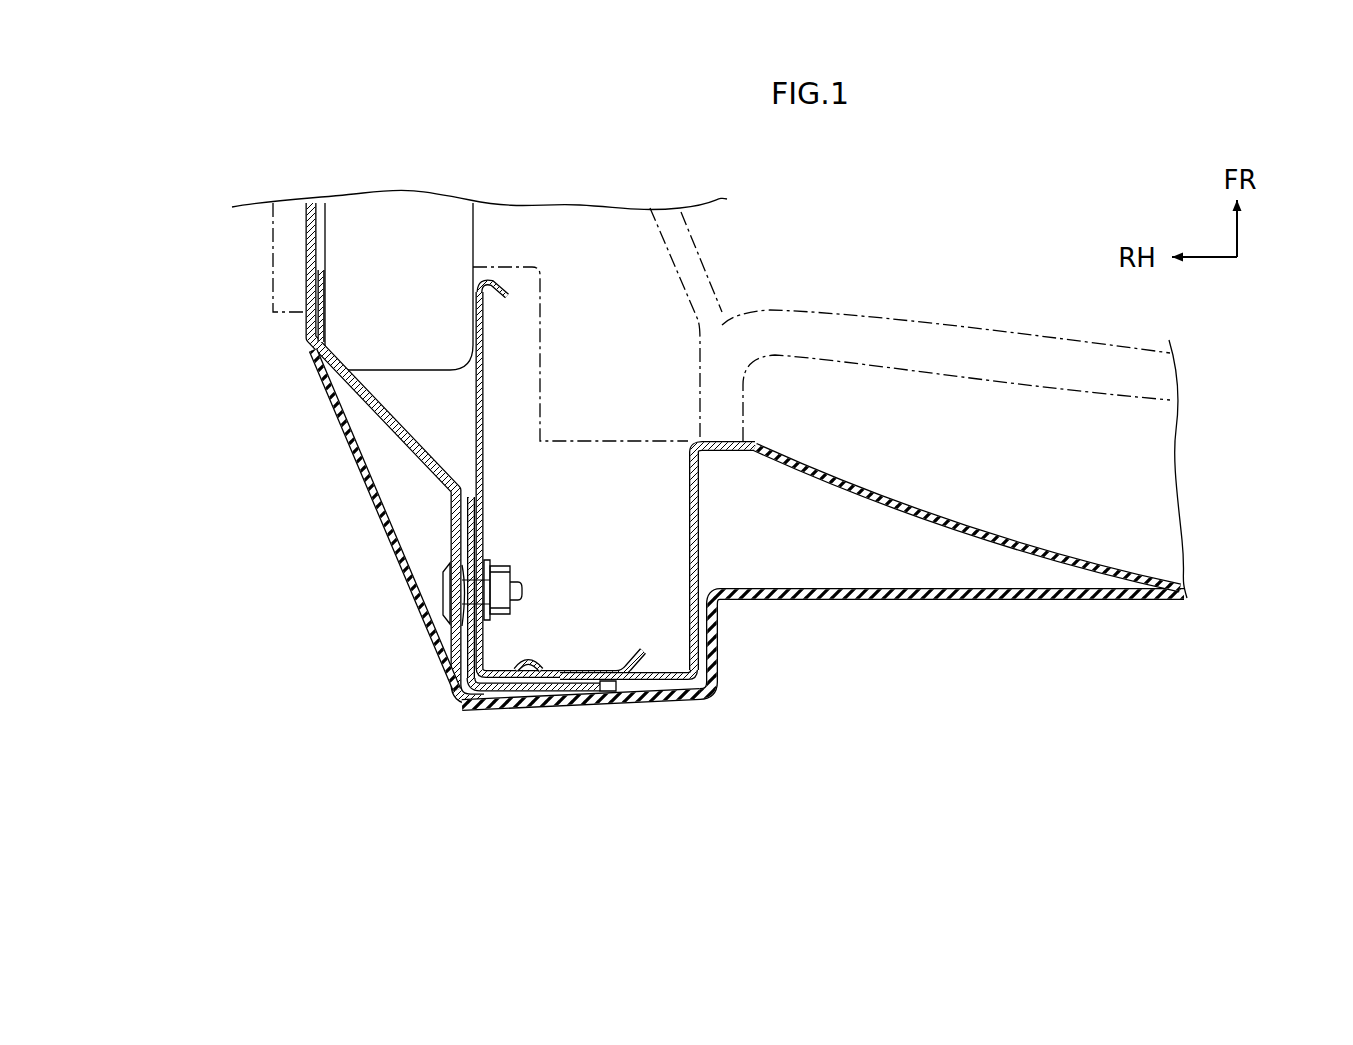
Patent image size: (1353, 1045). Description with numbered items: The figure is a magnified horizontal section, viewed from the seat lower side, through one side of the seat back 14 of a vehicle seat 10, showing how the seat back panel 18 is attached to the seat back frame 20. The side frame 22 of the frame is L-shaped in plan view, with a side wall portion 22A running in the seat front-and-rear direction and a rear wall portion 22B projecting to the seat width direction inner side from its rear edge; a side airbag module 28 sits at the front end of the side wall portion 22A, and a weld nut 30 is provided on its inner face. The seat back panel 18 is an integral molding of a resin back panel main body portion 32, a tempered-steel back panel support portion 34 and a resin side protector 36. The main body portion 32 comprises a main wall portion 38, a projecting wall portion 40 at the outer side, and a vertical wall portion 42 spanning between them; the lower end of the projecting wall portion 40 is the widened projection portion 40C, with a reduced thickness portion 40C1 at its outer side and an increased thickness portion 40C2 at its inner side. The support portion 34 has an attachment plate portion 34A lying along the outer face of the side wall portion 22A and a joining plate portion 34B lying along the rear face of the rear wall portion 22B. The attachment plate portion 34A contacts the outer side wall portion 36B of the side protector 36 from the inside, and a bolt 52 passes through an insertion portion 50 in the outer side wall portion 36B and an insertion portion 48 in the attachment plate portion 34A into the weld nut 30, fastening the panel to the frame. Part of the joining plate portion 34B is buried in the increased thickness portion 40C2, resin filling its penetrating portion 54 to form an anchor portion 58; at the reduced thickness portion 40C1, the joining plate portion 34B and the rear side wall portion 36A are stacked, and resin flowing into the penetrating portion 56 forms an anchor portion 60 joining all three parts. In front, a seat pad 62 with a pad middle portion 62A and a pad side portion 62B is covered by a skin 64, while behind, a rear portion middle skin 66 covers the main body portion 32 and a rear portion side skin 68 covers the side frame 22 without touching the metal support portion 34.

The vehicle seat 10 is at (568, 807).
The seat back 14 is at (1109, 627).
The seat back panel 18 is at (973, 657).
The seat back frame 20 is at (617, 535).
The side frame 22 is at (580, 478).
The side wall portion 22A is at (484, 467).
The rear wall portion 22B is at (618, 667).
The side airbag module 28 is at (395, 240).
The weld nut 30 is at (508, 574).
The back panel main body portion 32 is at (1039, 520).
The back panel support portion 34 is at (419, 650).
The attachment plate portion 34A is at (462, 553).
The joining plate portion 34B is at (513, 707).
The side protector 36 is at (348, 478).
The rear side wall portion 36A is at (471, 705).
The outer side wall portion 36B is at (392, 432).
The main wall portion 38 is at (948, 505).
The projecting wall portion 40 is at (618, 692).
The projection portion 40C is at (612, 727).
The reduced thickness portion 40C1 is at (553, 671).
The increased thickness portion 40C2 is at (660, 697).
The vertical wall portion 42 is at (699, 543).
The insertion portion 48 is at (488, 577).
The insertion portion 50 is at (460, 628).
The bolt 52 is at (523, 594).
The penetrating portion 54 is at (585, 690).
The penetrating portion 56 is at (520, 664).
The anchor portion 58 is at (599, 670).
The anchor portion 60 is at (537, 703).
The seat pad 62 is at (809, 375).
The pad middle portion 62A is at (1145, 458).
The pad side portion 62B is at (596, 265).
The skin 64 is at (897, 355).
The rear portion middle skin 66 is at (912, 601).
The rear portion side skin 68 is at (391, 549).